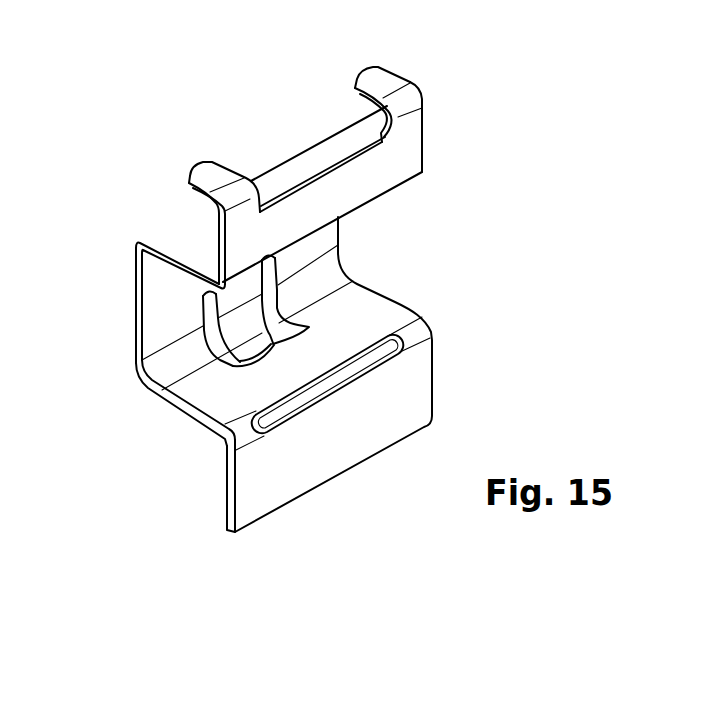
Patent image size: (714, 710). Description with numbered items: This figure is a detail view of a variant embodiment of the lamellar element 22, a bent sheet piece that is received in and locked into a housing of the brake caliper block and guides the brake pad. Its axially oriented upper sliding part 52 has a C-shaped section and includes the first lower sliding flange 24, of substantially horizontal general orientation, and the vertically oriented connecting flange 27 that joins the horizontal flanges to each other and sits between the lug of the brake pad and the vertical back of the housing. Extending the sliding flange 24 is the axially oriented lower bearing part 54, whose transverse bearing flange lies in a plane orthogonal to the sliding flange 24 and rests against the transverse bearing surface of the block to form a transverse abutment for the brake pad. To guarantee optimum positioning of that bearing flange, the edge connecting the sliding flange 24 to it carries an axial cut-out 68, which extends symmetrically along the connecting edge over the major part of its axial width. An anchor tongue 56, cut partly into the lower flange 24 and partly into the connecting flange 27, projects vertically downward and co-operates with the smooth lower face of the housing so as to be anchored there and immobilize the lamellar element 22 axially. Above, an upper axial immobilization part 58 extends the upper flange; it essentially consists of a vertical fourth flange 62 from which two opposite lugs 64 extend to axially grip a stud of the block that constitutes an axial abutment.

The lamellar element 22 is at (327, 315).
The first lower sliding flange 24 is at (198, 413).
The vertical connecting flange 27 is at (136, 317).
The upper sliding part 52 is at (125, 297).
The lower bearing part 54 is at (234, 546).
The anchor tongue 56 is at (242, 341).
The upper axial immobilization part 58 is at (434, 114).
The vertical fourth flange 62 is at (370, 177).
The lugs 64 is at (364, 72).
The axial cut-out 68 is at (305, 395).